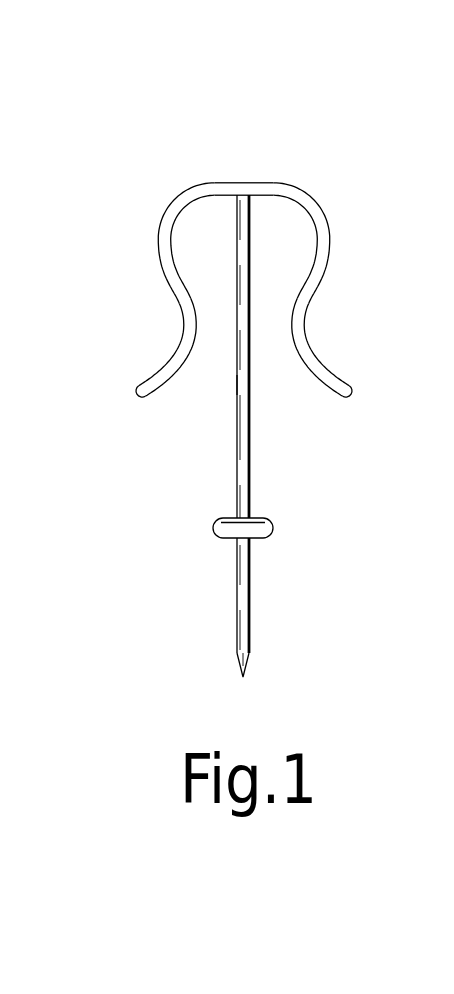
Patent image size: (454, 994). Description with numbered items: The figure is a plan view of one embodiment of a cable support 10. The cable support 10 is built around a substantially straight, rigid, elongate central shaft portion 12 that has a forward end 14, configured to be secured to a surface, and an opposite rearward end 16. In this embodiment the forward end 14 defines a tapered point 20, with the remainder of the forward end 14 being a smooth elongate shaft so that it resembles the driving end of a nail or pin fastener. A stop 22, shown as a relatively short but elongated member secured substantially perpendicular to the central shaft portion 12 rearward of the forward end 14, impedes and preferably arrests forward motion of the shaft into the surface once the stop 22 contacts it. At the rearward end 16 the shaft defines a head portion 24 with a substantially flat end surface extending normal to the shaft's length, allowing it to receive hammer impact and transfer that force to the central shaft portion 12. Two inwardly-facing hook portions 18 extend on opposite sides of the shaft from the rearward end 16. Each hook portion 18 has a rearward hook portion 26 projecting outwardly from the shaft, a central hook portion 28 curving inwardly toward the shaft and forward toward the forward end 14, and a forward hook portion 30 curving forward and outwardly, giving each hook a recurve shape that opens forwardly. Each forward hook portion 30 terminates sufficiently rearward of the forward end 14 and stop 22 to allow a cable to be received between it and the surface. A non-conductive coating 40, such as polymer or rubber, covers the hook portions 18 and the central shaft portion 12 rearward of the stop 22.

The cable support 10 is at (150, 173).
The central shaft portion 12 is at (282, 452).
The forward end 14 is at (282, 594).
The rearward end 16 is at (261, 228).
The hook portions 18 is at (160, 258).
The tapered point 20 is at (235, 667).
The stop 22 is at (268, 523).
The head portion 24 is at (226, 183).
The rearward hook portion 26 is at (172, 198).
The central hook portion 28 is at (178, 308).
The forward hook portion 30 is at (160, 373).
The coating 40 is at (237, 388).